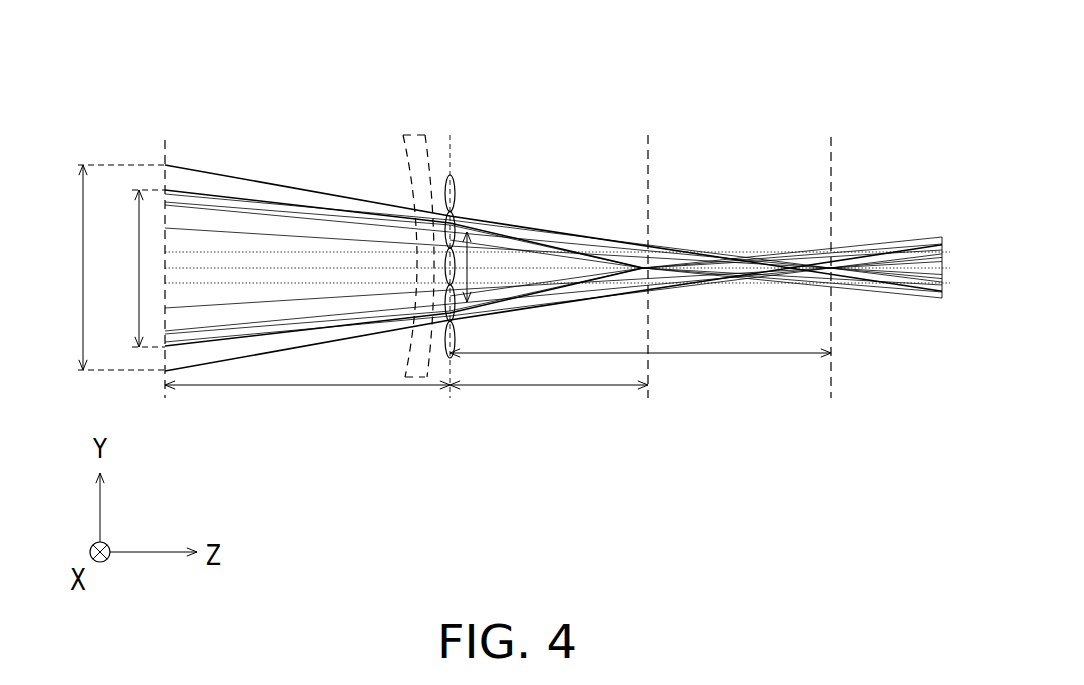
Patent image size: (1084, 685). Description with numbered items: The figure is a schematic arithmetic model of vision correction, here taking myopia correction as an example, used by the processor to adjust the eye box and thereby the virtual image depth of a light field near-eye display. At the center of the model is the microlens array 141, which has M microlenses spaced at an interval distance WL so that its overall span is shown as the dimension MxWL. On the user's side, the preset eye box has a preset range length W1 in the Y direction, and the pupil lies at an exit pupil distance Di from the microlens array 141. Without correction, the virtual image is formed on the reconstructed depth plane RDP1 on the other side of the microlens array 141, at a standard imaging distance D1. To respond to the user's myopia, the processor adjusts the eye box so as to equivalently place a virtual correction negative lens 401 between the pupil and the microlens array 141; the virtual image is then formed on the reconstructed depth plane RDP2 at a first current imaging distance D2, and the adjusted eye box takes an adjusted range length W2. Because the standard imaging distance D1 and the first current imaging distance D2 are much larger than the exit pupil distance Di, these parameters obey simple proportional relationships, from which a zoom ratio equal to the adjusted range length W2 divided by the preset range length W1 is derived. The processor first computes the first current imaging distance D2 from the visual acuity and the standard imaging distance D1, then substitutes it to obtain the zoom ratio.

The microlens array 141 is at (450, 251).
The virtual correction negative lens 401 is at (410, 135).
The reconstructed depth plane RDP1 is at (833, 172).
The reconstructed depth plane RDP2 is at (652, 165).
The preset range length W1 is at (135, 268).
The adjusted range length W2 is at (107, 267).
The standard imaging distance D1 is at (640, 368).
The first current imaging distance D2 is at (549, 401).
The exit pupil distance Di is at (307, 401).
The microlens array extent MxWL is at (500, 267).